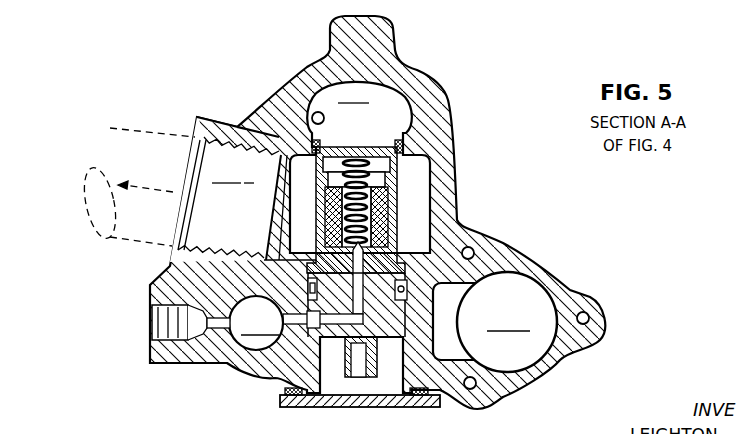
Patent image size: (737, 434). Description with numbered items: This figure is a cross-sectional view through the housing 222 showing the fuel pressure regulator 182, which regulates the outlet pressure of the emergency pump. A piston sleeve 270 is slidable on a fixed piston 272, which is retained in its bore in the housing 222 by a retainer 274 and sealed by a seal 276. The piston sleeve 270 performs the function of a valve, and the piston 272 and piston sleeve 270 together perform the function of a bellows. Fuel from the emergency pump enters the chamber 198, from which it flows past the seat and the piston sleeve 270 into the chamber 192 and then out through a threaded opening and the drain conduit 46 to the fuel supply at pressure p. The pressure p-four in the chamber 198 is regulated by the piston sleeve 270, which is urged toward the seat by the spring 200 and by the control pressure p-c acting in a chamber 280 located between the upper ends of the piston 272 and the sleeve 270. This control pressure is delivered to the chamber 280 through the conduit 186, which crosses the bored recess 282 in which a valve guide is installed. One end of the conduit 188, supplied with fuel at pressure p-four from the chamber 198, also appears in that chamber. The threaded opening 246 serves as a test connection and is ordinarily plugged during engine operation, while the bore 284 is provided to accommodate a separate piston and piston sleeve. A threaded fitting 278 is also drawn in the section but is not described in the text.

The drain conduit 46 is at (110, 240).
The fuel pressure regulator 182 is at (414, 167).
The conduit 186 is at (308, 352).
The conduit 188 is at (312, 115).
The chamber 192 is at (233, 174).
The chamber 198 is at (384, 140).
The spring 200 is at (404, 131).
The housing 222 is at (423, 106).
The threaded opening 246 is at (168, 333).
The piston sleeve 270 is at (400, 187).
The fixed piston 272 is at (382, 212).
The retainer 274 is at (408, 393).
The seal 276 is at (404, 288).
The threaded fitting 278 is at (215, 116).
The chamber 280 is at (322, 68).
The bored recess 282 is at (296, 323).
The bore 284 is at (495, 322).